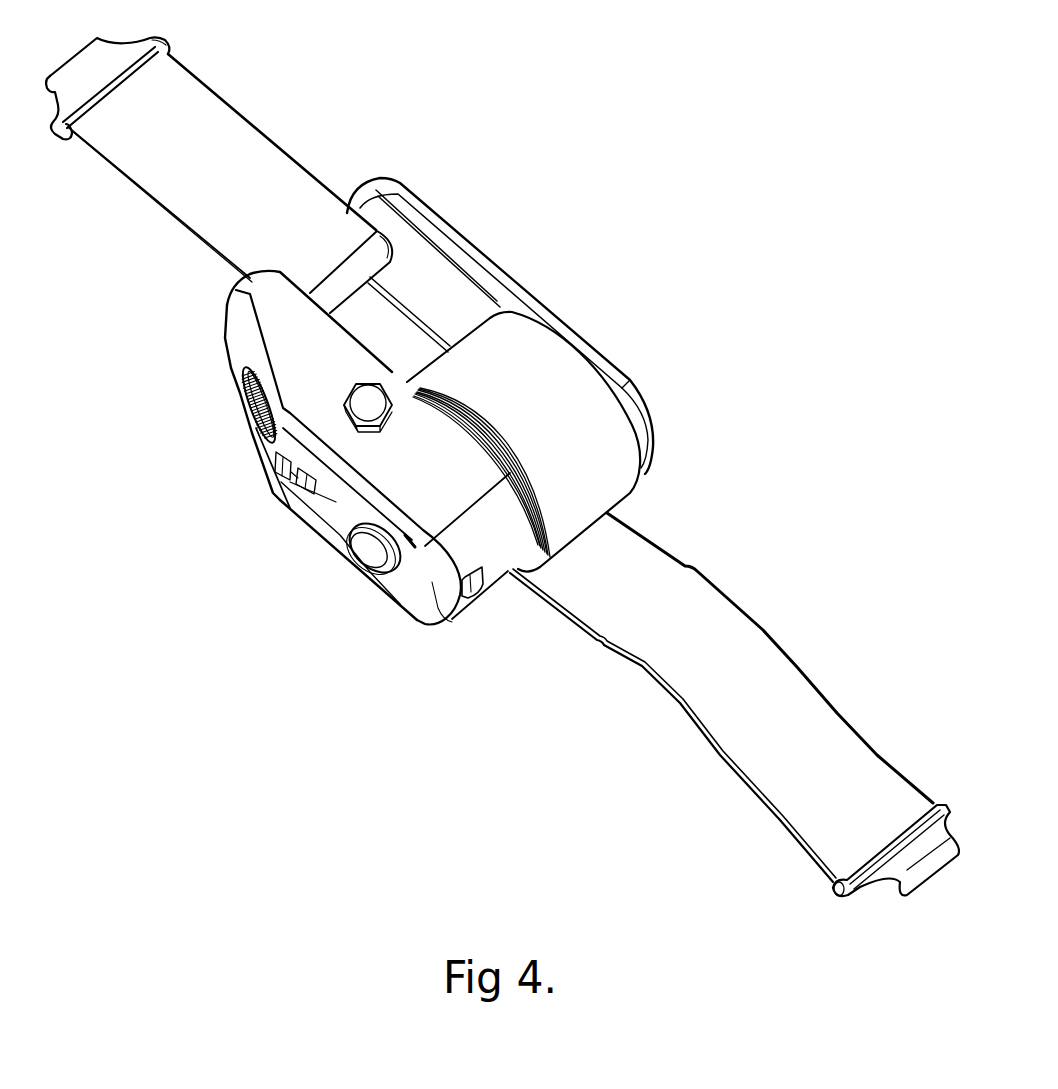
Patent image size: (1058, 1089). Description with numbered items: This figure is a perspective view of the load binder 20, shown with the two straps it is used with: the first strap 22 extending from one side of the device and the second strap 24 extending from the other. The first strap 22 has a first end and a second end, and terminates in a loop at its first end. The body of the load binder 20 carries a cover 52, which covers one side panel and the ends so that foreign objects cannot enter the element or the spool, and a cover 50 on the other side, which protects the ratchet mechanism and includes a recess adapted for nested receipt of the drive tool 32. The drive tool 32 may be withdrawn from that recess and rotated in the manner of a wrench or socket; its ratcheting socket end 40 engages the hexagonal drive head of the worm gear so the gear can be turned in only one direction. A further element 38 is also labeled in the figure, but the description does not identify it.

The load binder 20 is at (738, 380).
The first strap 22 is at (240, 147).
The second strap 24 is at (763, 677).
The drive tool 32 is at (293, 477).
The push button 38 is at (368, 553).
The ratcheting socket end 40 is at (250, 423).
The cover 50 is at (448, 577).
The cover 52 is at (532, 300).